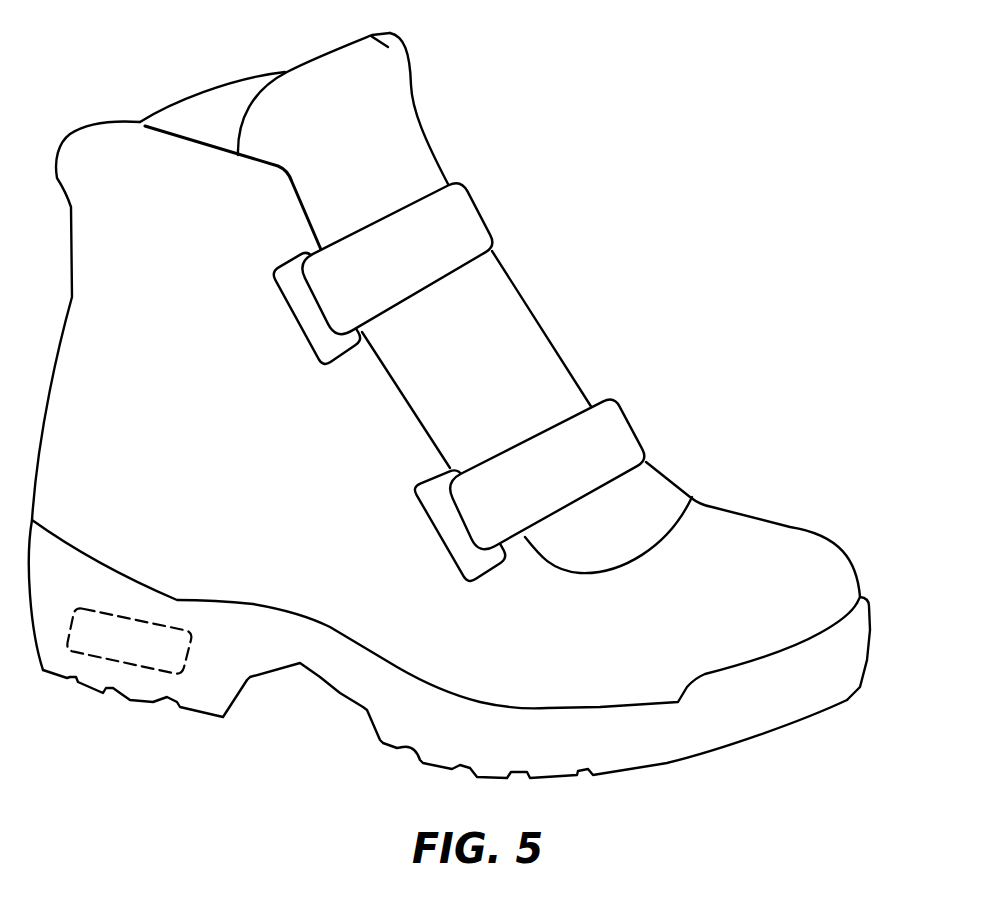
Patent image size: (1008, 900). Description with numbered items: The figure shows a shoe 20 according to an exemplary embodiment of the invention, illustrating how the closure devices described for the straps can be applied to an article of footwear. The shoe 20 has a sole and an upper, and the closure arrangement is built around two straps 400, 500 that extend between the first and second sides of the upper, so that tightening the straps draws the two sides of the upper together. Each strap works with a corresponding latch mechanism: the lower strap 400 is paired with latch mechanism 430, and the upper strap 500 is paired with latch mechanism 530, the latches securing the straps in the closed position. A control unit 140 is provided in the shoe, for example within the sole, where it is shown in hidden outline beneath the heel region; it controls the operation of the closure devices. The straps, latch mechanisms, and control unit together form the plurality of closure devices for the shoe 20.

The shoe 20 is at (72, 164).
The control unit 140 is at (142, 672).
The strap 400 is at (634, 421).
The latch mechanism 430 is at (440, 521).
The strap 500 is at (483, 218).
The latch mechanism 530 is at (308, 330).